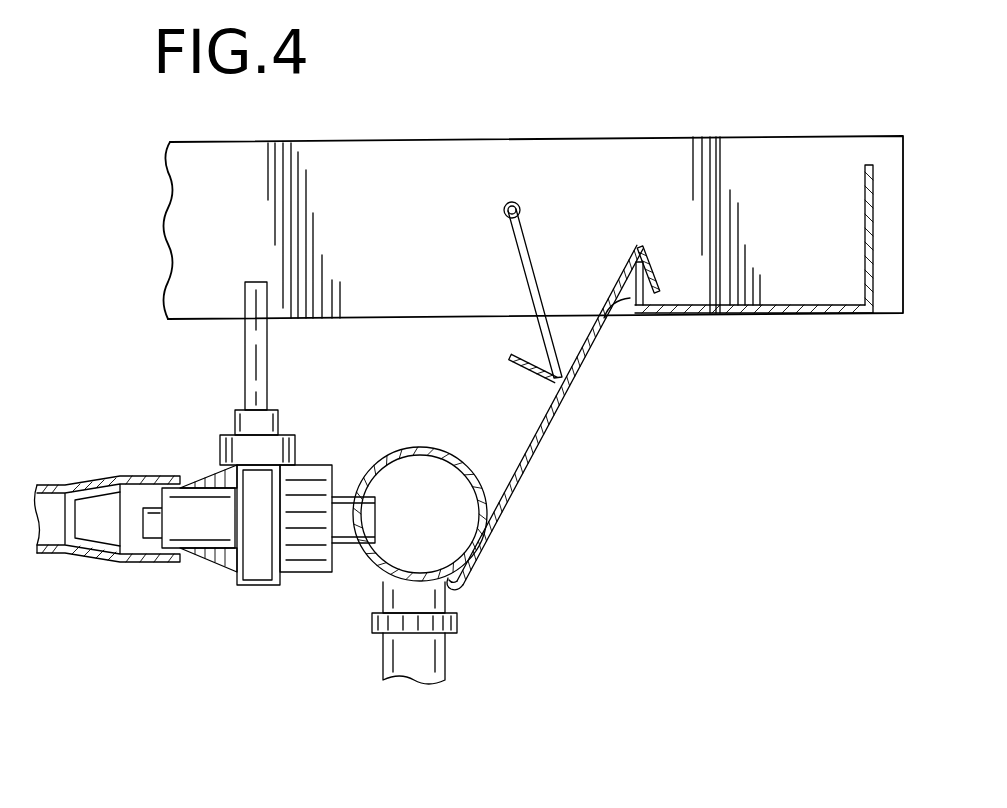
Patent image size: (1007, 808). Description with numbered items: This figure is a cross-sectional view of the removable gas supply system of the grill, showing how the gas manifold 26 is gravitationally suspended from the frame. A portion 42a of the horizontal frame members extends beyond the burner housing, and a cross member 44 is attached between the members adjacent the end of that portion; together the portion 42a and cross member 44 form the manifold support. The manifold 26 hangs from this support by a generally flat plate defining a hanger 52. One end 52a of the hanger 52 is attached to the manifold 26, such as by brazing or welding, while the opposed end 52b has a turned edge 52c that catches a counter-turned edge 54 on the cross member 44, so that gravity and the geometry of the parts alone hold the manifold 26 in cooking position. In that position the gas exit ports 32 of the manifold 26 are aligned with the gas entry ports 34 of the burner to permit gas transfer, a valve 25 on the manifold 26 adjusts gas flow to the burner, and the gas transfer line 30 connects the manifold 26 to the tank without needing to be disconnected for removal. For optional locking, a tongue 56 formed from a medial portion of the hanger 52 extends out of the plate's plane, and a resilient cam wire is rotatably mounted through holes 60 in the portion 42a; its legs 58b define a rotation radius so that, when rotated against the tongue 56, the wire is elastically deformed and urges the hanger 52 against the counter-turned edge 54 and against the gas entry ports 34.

The portion of horizontal member 42a is at (415, 177).
The cross member 44 is at (803, 312).
The hanger 52 is at (543, 443).
The end of hanger 52a is at (487, 538).
The opposed end of hanger 52b is at (640, 247).
The turned edge 52c is at (648, 288).
The counter-turned edge 54 is at (616, 310).
The tongue 56 is at (524, 372).
The legs of wire 58b is at (540, 276).
The holes 60 is at (514, 203).
The valve 25 is at (272, 455).
The gas manifold 26 is at (434, 410).
The gas transfer line 30 is at (437, 657).
The gas exit ports 32 is at (176, 527).
The gas entry ports 34 is at (136, 478).